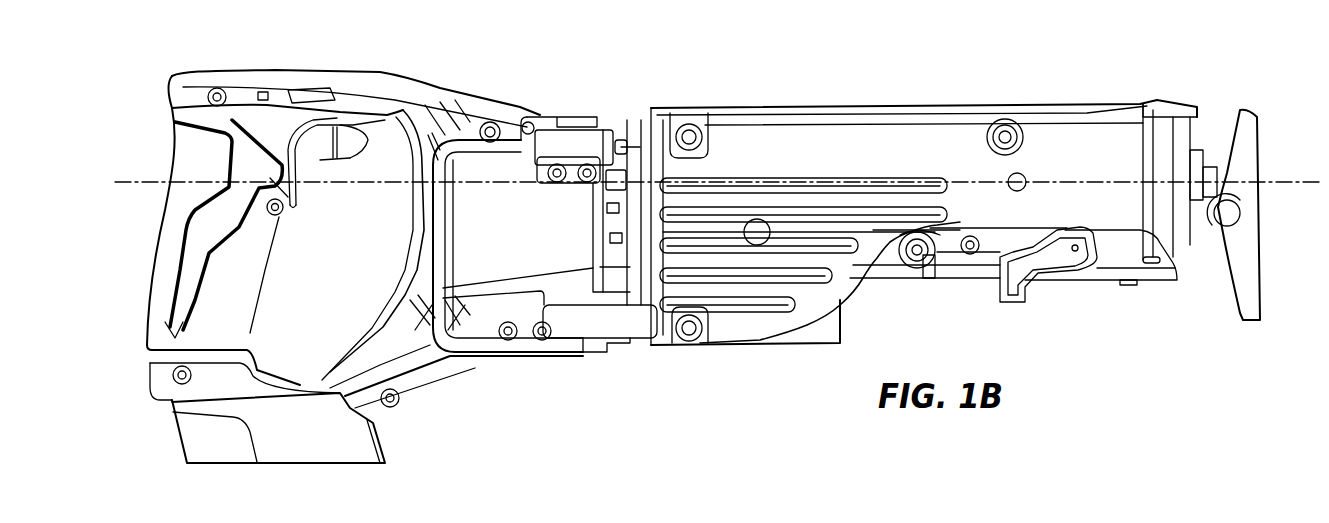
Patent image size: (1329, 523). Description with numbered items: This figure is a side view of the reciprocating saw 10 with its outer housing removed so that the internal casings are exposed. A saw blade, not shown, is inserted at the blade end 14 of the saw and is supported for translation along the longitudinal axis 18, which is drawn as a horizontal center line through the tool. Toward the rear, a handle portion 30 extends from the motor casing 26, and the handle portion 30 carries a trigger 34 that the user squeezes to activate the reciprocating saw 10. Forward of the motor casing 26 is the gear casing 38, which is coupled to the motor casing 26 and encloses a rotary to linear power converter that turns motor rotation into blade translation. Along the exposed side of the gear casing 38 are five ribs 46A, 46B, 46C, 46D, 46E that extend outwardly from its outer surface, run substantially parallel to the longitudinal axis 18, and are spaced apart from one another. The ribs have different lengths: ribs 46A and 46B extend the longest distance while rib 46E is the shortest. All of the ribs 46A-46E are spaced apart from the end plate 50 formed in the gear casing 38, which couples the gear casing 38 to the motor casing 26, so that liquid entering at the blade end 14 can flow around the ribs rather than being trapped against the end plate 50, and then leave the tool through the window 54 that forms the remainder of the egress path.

The reciprocating saw 10 is at (154, 93).
The blade end 14 is at (1232, 97).
The longitudinal axis 18 is at (1278, 186).
The motor casing 26 is at (577, 320).
The handle portion 30 is at (240, 90).
The trigger 34 is at (335, 160).
The gear casing 38 is at (798, 147).
The rib 46A is at (900, 188).
The rib 46B is at (943, 215).
The rib 46C is at (857, 247).
The rib 46D is at (823, 282).
The rib 46E is at (785, 305).
The end plate 50 is at (621, 150).
The window 54 is at (612, 352).